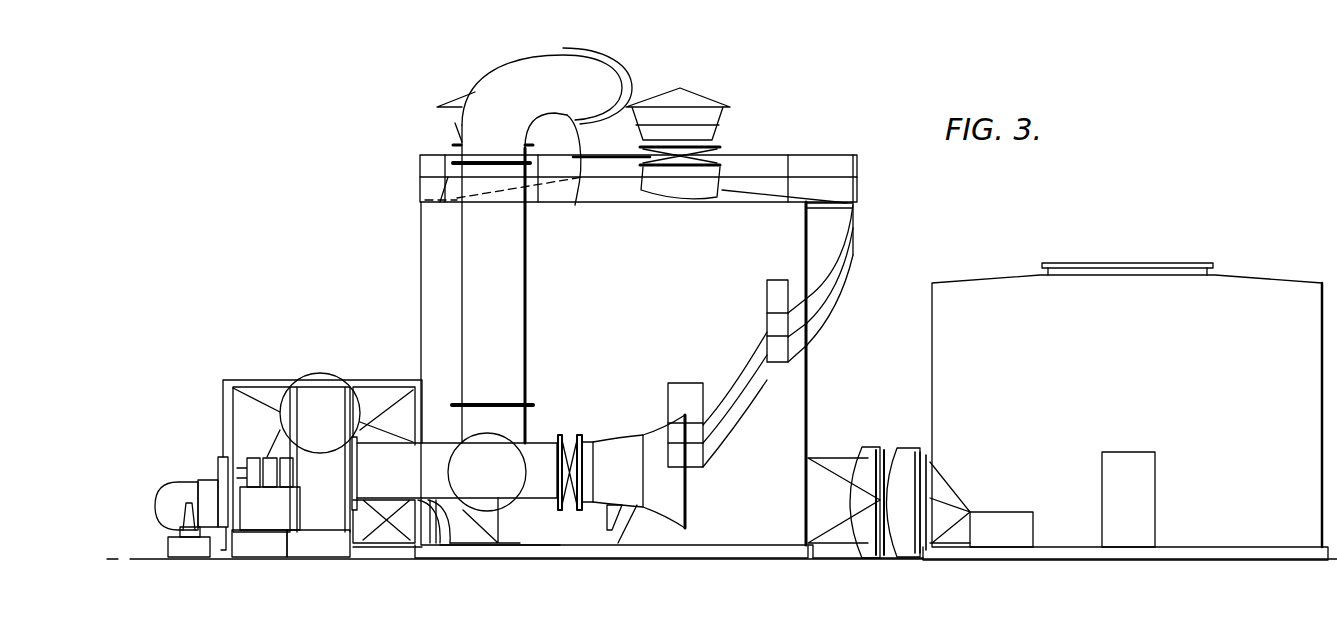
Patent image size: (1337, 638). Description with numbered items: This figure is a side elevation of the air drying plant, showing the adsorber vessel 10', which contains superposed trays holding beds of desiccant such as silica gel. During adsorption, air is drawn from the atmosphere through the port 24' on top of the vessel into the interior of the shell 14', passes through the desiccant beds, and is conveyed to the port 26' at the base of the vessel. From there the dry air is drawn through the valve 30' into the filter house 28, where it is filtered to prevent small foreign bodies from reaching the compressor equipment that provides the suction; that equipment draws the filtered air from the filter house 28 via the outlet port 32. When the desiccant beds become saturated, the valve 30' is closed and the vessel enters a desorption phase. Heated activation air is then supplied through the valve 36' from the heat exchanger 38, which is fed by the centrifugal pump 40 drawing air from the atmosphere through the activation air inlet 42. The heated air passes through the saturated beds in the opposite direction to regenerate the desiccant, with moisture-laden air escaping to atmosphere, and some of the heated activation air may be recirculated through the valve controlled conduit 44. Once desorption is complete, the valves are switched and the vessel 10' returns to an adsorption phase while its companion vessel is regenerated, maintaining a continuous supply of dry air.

The adsorber vessel 10' is at (634, 356).
The shell 14' is at (602, 191).
The port 24' is at (677, 123).
The port 26' is at (828, 502).
The filter house 28 is at (987, 303).
The valve 30' is at (960, 502).
The outlet port 32 is at (1105, 263).
The valve 36' is at (489, 489).
The heat exchanger 38 is at (255, 390).
The centrifugal pump 40 is at (335, 455).
The activation air inlet 42 is at (663, 485).
The valve controlled conduit 44 is at (483, 280).